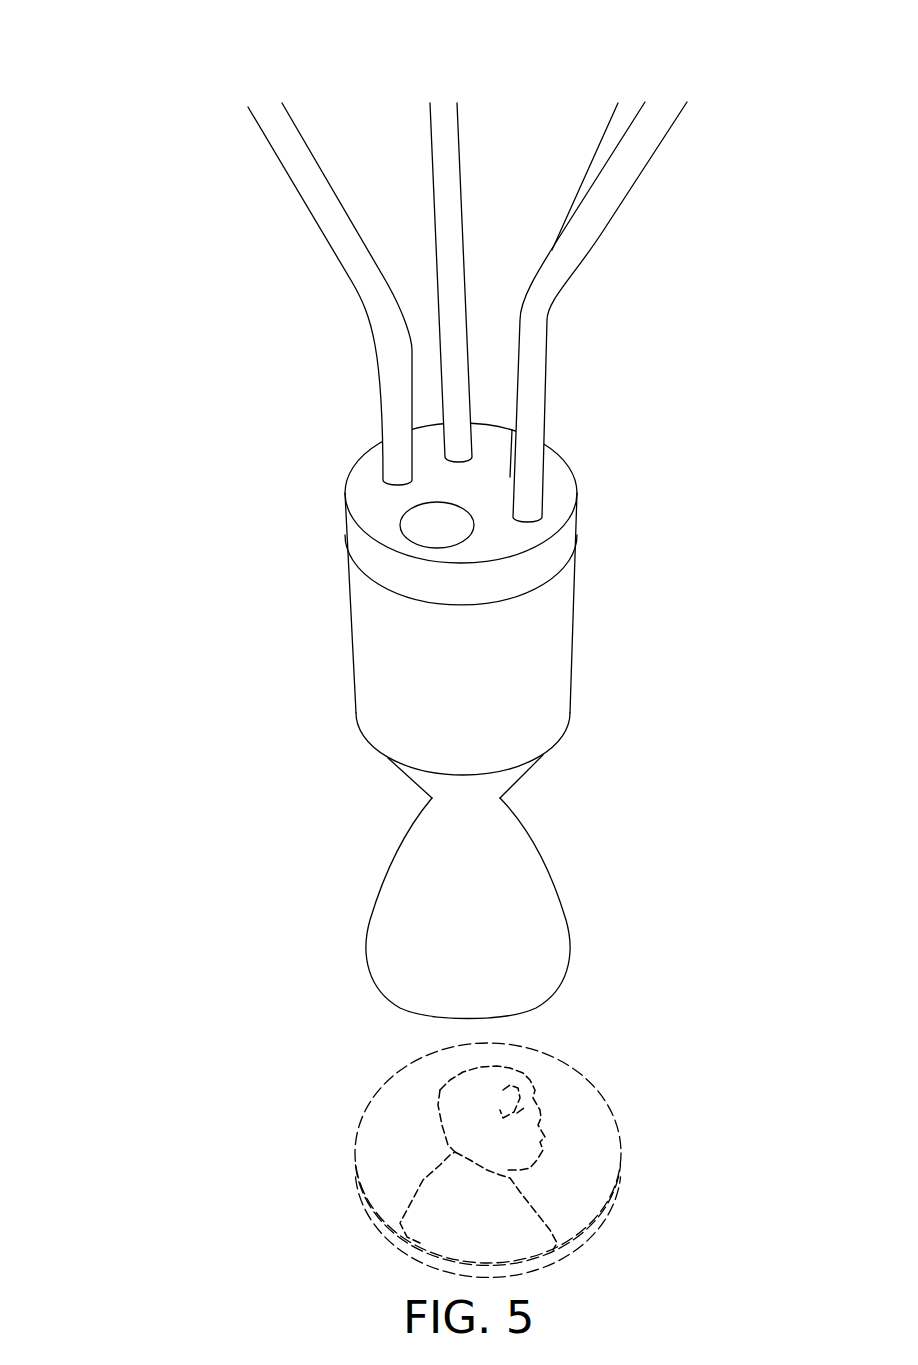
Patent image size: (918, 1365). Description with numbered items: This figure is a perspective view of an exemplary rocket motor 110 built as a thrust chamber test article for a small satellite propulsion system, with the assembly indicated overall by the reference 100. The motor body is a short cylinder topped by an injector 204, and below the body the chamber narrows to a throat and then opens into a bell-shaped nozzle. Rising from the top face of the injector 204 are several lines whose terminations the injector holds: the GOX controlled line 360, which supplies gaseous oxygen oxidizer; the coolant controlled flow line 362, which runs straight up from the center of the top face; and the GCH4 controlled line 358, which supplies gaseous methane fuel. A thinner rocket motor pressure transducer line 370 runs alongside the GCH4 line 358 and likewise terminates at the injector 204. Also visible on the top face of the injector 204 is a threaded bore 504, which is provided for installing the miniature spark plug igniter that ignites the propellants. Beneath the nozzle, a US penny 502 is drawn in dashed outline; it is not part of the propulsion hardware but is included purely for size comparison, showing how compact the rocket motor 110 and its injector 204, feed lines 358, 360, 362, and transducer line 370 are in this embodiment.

The propulsion system 100 is at (115, 28).
The rocket motor 110 is at (372, 660).
The injector 204 is at (372, 525).
The GCH4 controlled line 358 is at (668, 115).
The GOX controlled line 360 is at (265, 107).
The coolant controlled flow line 362 is at (443, 112).
The rocket motor pressure transducer line 370 is at (622, 107).
The US penny 502 is at (380, 1133).
The threaded bore 504 is at (460, 538).